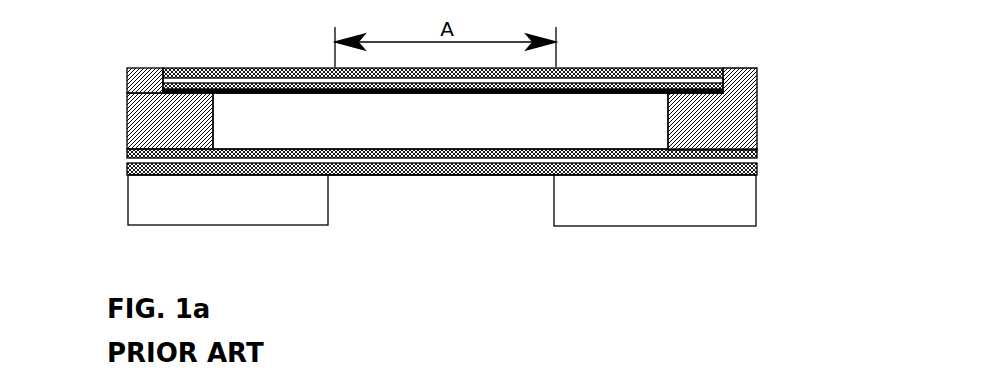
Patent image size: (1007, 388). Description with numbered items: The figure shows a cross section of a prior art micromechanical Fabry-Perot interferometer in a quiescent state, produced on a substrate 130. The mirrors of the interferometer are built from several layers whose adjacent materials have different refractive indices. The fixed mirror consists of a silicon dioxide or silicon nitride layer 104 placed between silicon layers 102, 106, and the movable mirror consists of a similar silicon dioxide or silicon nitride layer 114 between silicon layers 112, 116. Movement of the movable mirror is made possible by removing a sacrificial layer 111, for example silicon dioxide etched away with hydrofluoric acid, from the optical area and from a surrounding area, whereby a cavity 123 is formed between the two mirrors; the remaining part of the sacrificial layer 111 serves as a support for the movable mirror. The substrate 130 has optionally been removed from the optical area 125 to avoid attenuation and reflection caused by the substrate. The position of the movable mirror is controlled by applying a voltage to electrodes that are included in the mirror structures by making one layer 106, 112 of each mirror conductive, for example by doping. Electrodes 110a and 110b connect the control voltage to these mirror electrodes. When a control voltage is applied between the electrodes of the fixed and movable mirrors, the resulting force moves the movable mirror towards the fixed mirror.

The silicon layer 102 is at (155, 175).
The silicon dioxide or silicon nitride layer 104 is at (128, 163).
The silicon layer 106 is at (757, 157).
The electrode 110a is at (757, 108).
The electrode 110b is at (138, 76).
The sacrificial layer 111 is at (128, 125).
The silicon layer 112 is at (290, 93).
The silicon dioxide or silicon nitride layer 114 is at (597, 83).
The silicon layer 116 is at (708, 68).
The cavity 123 is at (565, 135).
The optical area 125 is at (415, 213).
The substrate 130 is at (735, 222).